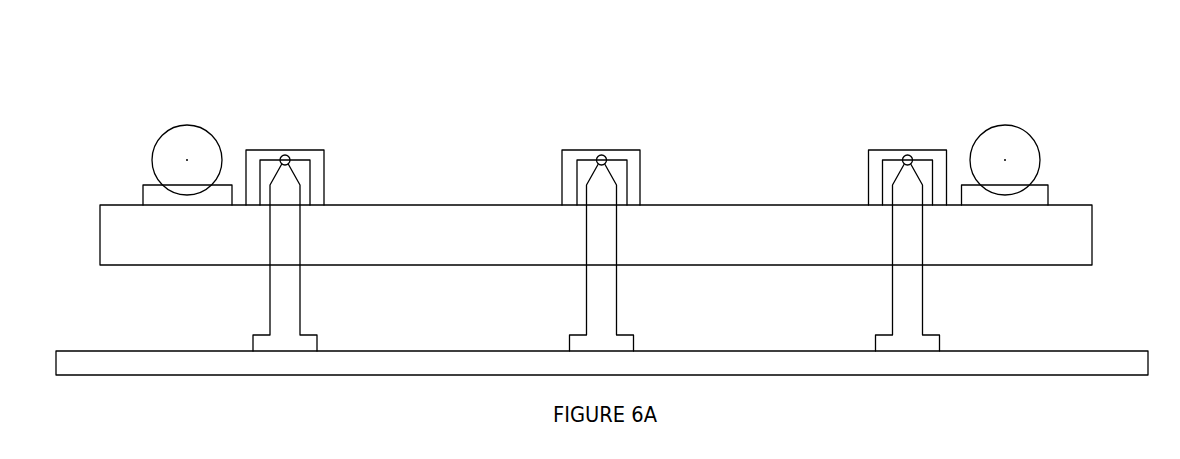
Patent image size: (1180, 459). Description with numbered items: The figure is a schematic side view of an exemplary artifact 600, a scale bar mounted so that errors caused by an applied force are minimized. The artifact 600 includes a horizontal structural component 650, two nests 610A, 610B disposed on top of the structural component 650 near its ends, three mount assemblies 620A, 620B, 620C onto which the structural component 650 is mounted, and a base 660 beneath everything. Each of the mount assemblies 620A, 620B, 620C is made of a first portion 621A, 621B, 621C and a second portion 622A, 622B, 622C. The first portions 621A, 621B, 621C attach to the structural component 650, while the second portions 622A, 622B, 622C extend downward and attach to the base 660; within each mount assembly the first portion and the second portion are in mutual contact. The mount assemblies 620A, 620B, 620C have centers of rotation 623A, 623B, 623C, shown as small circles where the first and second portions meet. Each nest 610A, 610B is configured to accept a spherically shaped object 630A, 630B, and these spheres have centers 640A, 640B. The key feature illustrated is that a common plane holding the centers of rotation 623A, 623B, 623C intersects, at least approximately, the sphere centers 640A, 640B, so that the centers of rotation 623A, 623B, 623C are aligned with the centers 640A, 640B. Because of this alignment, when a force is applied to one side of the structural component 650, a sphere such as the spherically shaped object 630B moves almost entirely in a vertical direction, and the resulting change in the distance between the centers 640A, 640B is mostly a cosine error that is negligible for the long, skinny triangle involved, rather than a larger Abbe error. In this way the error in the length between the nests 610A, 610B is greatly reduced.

The artifact 600 is at (598, 64).
The nest 610A is at (152, 185).
The nest 610B is at (1047, 185).
The mount assembly 620A is at (408, 126).
The mount assembly 620B is at (537, 160).
The mount assembly 620C is at (782, 126).
The first portion 621A is at (310, 150).
The first portion 621B is at (627, 150).
The first portion 621C is at (885, 150).
The second portion 622A is at (294, 179).
The second portion 622B is at (611, 179).
The second portion 622C is at (898, 179).
The center of rotation 623A is at (290, 163).
The center of rotation 623B is at (606, 163).
The center of rotation 623C is at (903, 163).
The spherically shaped object 630A is at (172, 128).
The spherically shaped object 630B is at (987, 130).
The center 640A is at (187, 162).
The center 640B is at (1005, 162).
The structural component 650 is at (727, 205).
The base 660 is at (727, 351).